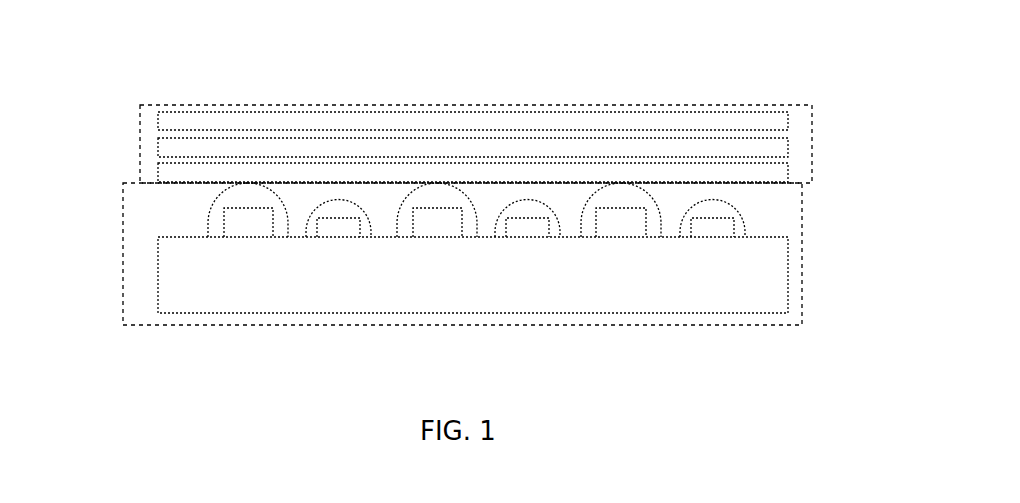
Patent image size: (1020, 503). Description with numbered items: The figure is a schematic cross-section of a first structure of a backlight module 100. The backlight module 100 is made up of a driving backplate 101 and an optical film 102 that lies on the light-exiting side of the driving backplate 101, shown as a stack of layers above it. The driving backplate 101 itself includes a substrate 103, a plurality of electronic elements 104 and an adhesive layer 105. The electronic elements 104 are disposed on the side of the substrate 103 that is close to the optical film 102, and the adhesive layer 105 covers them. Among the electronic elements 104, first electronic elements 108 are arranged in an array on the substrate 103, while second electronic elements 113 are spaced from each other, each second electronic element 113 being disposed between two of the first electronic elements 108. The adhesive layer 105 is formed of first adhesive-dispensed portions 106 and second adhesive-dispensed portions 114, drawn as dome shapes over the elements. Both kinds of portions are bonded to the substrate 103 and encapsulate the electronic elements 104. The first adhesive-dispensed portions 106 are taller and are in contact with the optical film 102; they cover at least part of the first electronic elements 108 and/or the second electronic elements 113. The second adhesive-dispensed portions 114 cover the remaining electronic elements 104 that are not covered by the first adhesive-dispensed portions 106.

The backlight module 100 is at (122, 45).
The driving backplate 101 is at (123, 205).
The optical film 102 is at (140, 108).
The substrate 103 is at (698, 295).
The electronic elements 104 is at (456, 252).
The adhesive layer 105 is at (469, 215).
The first adhesive-dispensed portions 106 is at (218, 218).
The first electronic elements 108 is at (712, 228).
The second electronic elements 113 is at (248, 232).
The second adhesive-dispensed portions 114 is at (717, 211).